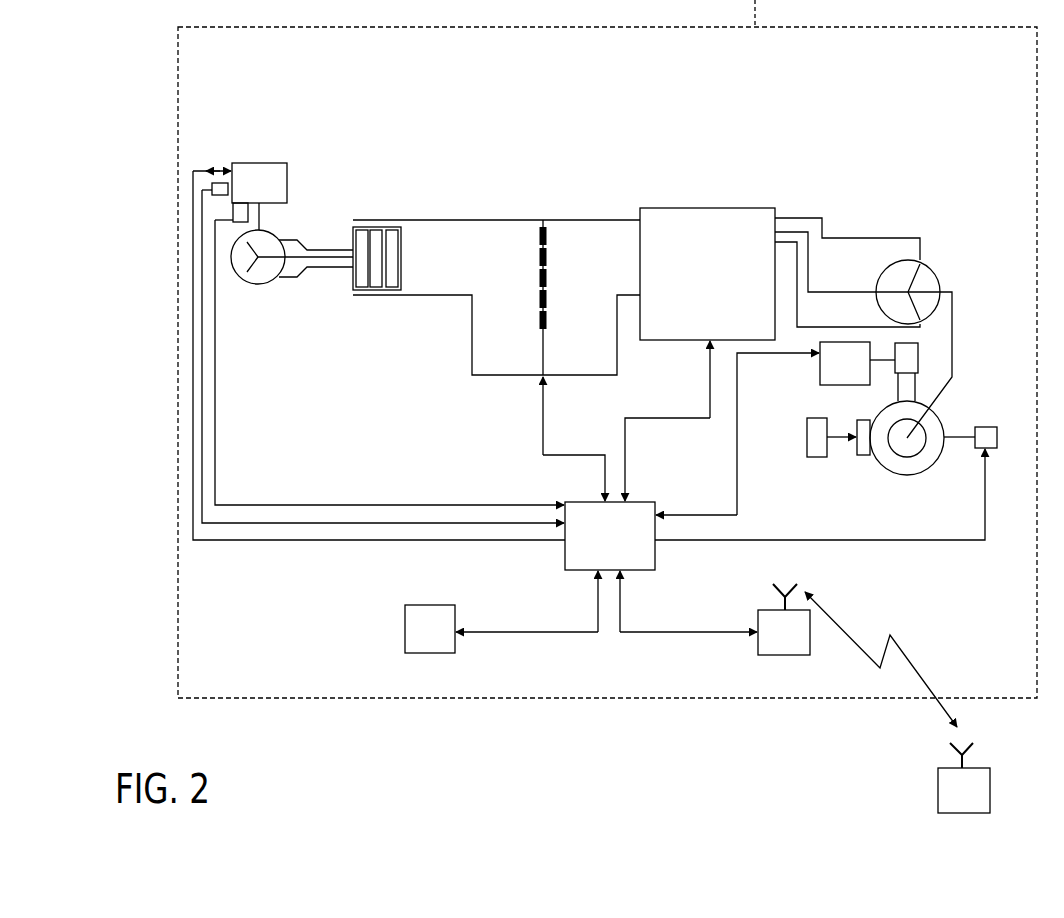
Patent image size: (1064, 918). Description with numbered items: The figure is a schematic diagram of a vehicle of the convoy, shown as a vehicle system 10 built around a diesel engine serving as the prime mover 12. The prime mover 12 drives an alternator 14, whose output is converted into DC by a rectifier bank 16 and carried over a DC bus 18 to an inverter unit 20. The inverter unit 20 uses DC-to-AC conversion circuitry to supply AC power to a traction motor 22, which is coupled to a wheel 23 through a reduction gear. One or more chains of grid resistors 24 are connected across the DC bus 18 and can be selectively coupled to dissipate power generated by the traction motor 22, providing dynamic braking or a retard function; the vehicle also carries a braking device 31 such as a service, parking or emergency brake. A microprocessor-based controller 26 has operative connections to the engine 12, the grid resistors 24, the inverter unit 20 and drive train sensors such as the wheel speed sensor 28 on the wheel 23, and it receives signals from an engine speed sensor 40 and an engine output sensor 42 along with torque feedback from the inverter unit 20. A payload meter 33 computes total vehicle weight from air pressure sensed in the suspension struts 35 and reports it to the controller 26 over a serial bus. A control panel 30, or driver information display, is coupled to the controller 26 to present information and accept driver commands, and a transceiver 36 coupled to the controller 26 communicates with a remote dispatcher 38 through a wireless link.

The vehicle system 10 is at (662, 78).
The prime mover 12 is at (240, 196).
The alternator 14 is at (258, 285).
The rectifier bank 16 is at (378, 234).
The DC bus 18 is at (462, 220).
The inverter unit 20 is at (788, 354).
The traction motor 22 is at (920, 270).
The wheel 23 is at (932, 420).
The grid resistors 24 is at (557, 268).
The controller 26 is at (424, 401).
The wheel speed sensor 28 is at (988, 427).
The control panel 30 is at (501, 629).
The braking device 31 is at (815, 416).
The payload meter 33 is at (775, 428).
The suspension struts 35 is at (912, 358).
The transceiver 36 is at (788, 655).
The dispatcher 38 is at (964, 778).
The engine speed sensor 40 is at (222, 189).
The engine output sensor 42 is at (240, 213).